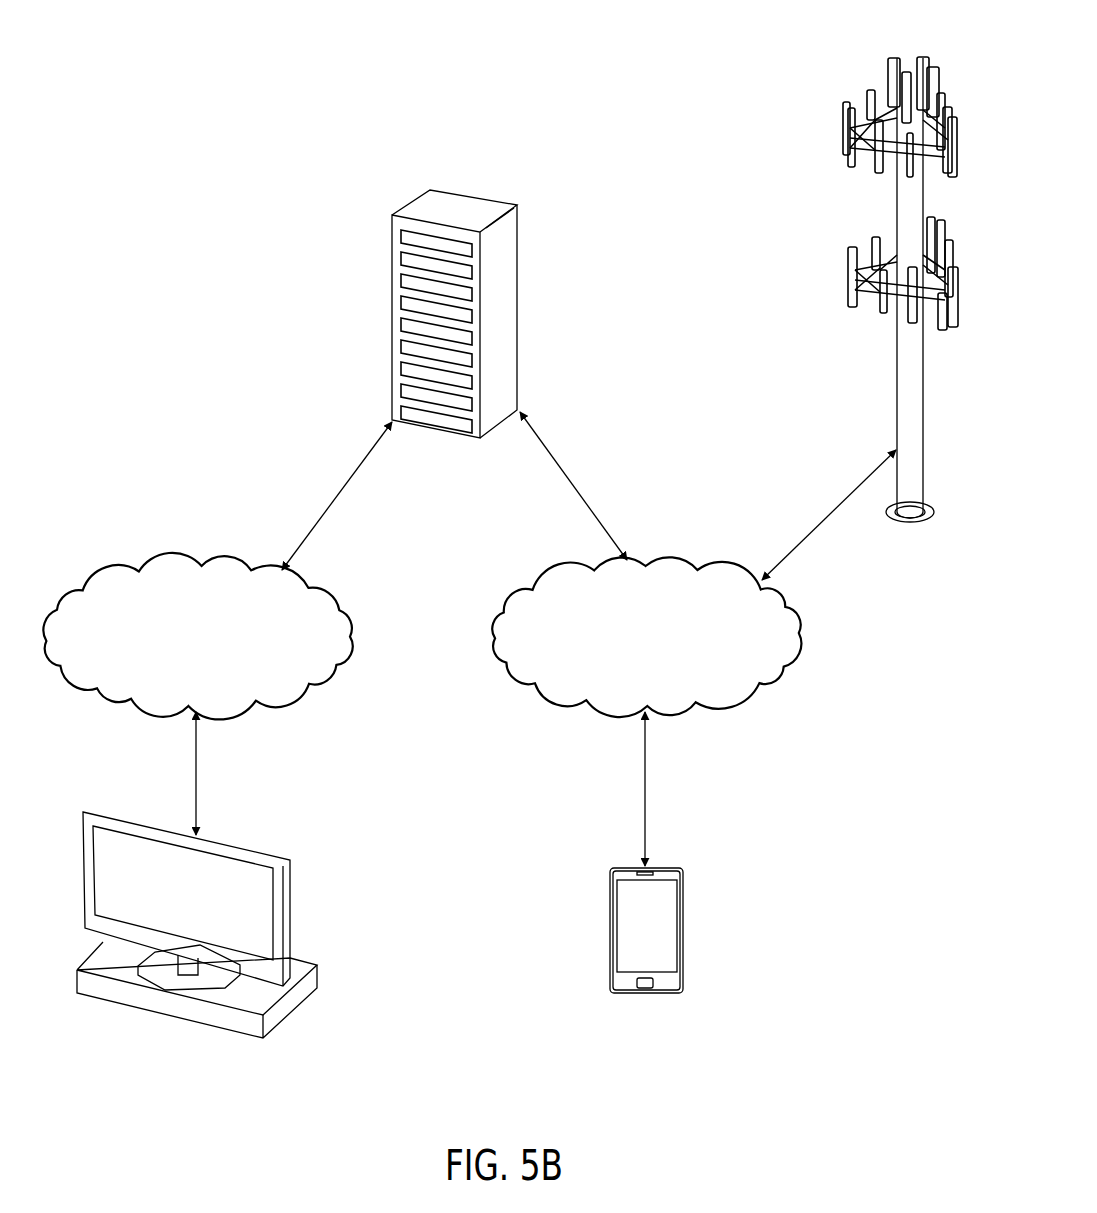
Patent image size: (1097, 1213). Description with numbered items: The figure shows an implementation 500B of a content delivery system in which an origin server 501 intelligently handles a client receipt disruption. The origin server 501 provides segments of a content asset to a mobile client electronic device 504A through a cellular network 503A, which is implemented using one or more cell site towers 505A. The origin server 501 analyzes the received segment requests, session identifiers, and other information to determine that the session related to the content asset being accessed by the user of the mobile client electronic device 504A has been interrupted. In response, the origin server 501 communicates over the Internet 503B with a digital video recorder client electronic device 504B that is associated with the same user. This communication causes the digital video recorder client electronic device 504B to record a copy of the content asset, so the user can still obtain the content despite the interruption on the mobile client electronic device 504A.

The implementation 500B is at (288, 142).
The origin server 501 is at (521, 266).
The cellular network 503A is at (745, 578).
The Internet 503B is at (138, 565).
The mobile client electronic device 504A is at (684, 907).
The digital video recorder client electronic device 504B is at (318, 977).
The cell site tower 505A is at (897, 392).